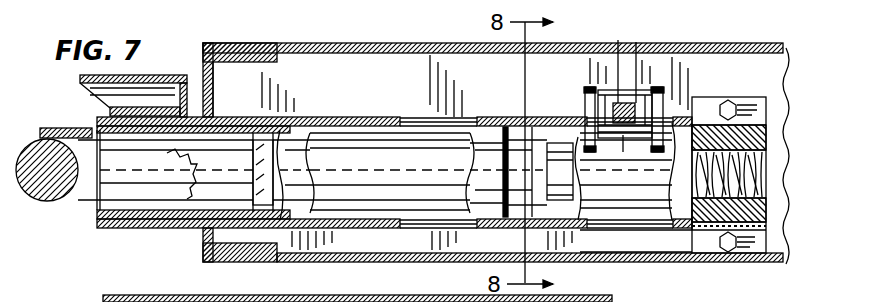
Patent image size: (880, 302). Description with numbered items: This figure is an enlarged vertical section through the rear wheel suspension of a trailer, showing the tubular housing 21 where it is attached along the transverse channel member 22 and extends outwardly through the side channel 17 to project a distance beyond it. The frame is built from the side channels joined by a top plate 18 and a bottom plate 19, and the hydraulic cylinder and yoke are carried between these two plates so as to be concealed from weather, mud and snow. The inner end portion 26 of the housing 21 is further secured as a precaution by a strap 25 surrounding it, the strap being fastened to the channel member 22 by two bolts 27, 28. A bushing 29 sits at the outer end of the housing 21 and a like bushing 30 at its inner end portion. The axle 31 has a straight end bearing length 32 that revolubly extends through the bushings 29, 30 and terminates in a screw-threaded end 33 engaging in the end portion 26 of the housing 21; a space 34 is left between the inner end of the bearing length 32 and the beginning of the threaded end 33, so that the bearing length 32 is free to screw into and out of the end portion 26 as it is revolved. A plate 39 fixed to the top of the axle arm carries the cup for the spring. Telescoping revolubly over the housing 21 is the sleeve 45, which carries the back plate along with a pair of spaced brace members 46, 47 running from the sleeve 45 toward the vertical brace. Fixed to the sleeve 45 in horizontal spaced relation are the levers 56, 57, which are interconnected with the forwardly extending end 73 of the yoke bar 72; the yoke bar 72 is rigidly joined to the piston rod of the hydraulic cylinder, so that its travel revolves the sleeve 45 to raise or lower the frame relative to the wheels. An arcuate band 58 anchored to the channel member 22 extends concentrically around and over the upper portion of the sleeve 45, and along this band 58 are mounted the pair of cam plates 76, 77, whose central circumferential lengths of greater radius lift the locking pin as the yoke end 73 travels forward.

The side channel 17 is at (214, 79).
The top plate 18 is at (295, 44).
The bottom plate 19 is at (257, 261).
The tubular housing 21 is at (134, 230).
The transverse channel member 22 is at (366, 243).
The strap 25 is at (756, 127).
The end portion 26 is at (706, 123).
The bolt 27 is at (729, 252).
The bolt 28 is at (733, 111).
The bushing 29 is at (115, 180).
The bushing 30 is at (593, 232).
The axle 31 is at (51, 198).
The straight end bearing length 32 is at (297, 127).
The screw-threaded end 33 is at (703, 231).
The space 34 is at (700, 126).
The top plate 39 is at (52, 128).
The sleeve 45 is at (107, 228).
The brace member 46 is at (153, 80).
The brace member 47 is at (110, 108).
The lever 56 is at (587, 109).
The lever 57 is at (667, 67).
The arcuate band 58 is at (591, 151).
The yoke bar 72 is at (623, 136).
The end 73 is at (618, 40).
The cam plate 76 is at (636, 30).
The cam plate 77 is at (603, 83).